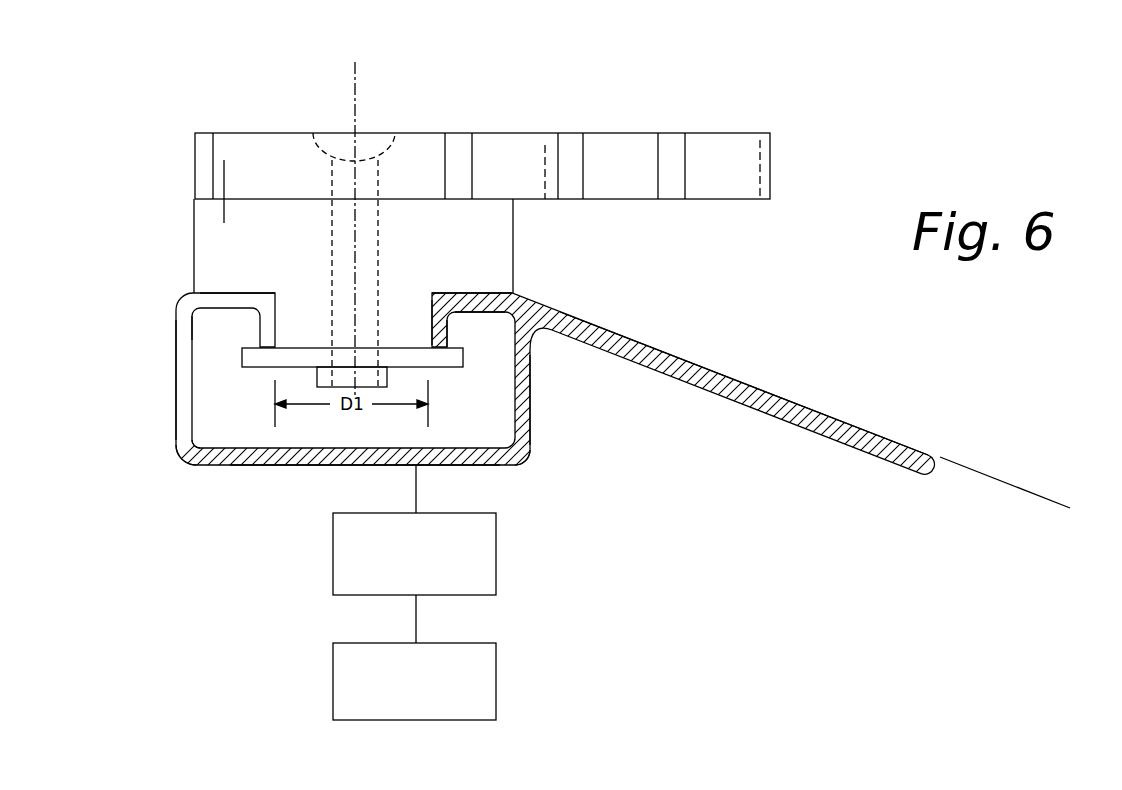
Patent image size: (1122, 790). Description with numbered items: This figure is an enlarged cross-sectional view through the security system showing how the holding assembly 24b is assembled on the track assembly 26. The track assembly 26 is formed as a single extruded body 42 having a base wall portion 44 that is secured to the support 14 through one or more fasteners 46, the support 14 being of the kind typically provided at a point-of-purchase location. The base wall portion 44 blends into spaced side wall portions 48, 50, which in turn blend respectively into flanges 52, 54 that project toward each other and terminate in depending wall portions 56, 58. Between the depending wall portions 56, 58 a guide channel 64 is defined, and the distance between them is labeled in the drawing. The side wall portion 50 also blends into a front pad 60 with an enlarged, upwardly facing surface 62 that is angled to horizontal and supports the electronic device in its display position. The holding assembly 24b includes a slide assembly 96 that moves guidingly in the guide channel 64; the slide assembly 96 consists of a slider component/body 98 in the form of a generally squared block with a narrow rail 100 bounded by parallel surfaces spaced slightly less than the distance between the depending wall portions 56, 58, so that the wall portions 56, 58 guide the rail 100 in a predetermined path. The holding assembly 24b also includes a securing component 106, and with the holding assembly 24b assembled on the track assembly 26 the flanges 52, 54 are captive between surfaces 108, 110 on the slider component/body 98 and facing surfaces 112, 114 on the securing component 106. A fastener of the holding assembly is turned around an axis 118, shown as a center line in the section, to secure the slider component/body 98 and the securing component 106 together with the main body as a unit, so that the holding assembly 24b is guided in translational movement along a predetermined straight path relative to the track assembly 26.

The holding assembly 24b is at (812, 111).
The slide assembly 96 is at (178, 215).
The slider component/body 98 is at (224, 223).
The guide channel 64 is at (433, 345).
The axis 118 is at (355, 98).
The track assembly 26 is at (228, 465).
The base wall portion 44 is at (320, 467).
The side wall portion 48 is at (175, 393).
The side wall portion 50 is at (530, 393).
The flange 52 is at (247, 287).
The flange 54 is at (479, 293).
The depending wall portion 56 is at (278, 338).
The depending wall portion 58 is at (380, 358).
The securing component 106 is at (190, 430).
The surface 108 is at (193, 330).
The facing surface 112 is at (262, 370).
The facing surface 114 is at (530, 440).
The surface 110 is at (433, 325).
The extruded body 42 is at (447, 338).
The narrow rail 100 is at (490, 315).
The front pad 60 is at (758, 388).
The upwardly facing surface 62 is at (855, 422).
The fasteners 46 is at (402, 588).
The support 14 is at (402, 713).